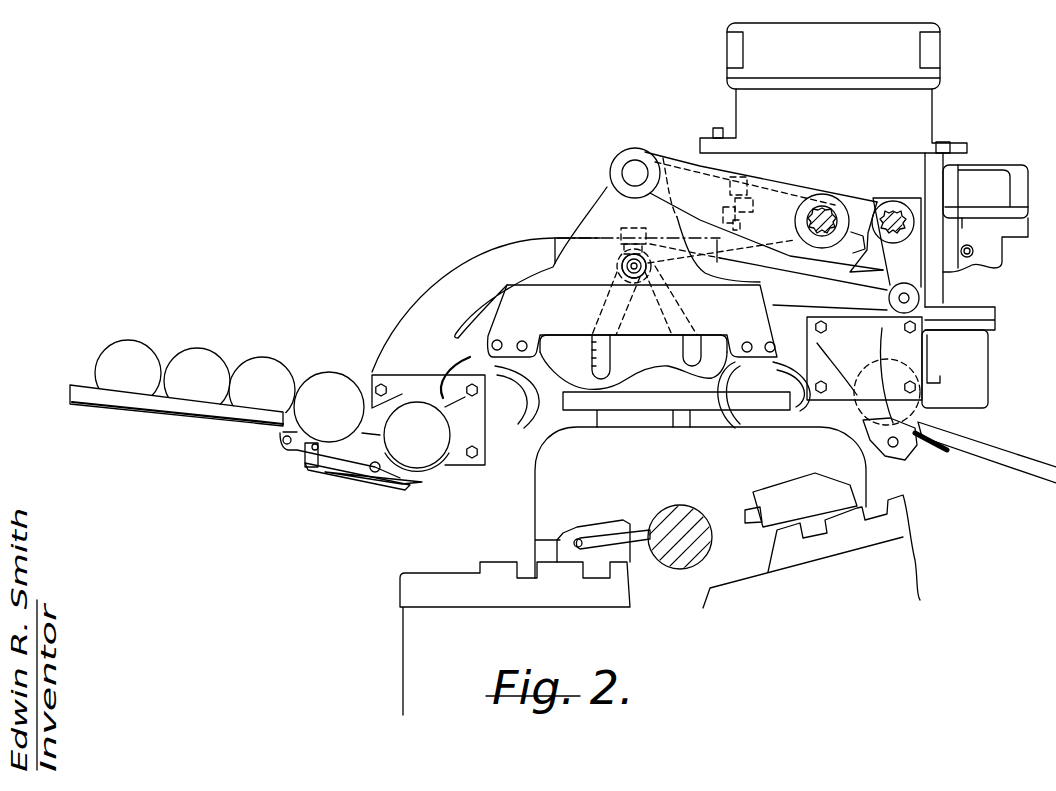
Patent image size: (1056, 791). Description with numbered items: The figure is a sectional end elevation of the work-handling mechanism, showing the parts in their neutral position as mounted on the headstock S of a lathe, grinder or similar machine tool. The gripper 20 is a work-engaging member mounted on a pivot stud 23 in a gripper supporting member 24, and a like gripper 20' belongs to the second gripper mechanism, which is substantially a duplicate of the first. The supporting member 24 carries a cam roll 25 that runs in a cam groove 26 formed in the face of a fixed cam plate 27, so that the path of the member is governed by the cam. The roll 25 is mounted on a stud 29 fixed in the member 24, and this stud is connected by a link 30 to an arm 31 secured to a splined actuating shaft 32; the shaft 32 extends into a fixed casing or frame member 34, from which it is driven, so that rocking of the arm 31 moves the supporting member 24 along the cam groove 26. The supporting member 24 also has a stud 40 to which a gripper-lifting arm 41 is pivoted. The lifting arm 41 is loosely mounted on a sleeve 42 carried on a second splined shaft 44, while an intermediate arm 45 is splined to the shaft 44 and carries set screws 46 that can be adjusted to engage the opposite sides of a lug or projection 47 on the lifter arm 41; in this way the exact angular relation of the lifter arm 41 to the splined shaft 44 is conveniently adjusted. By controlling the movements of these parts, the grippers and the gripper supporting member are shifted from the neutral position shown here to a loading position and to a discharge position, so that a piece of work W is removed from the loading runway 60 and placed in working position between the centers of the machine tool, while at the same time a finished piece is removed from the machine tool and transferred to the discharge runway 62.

The gripper 20 is at (455, 407).
The gripper jaws 20' is at (764, 395).
The pivot stud 23 is at (522, 341).
The gripper supporting member 24 is at (590, 282).
The cam roll 25 is at (647, 267).
The cam groove 26 is at (605, 352).
The fixed cam plate 27 is at (628, 372).
The stud 29 is at (622, 268).
The link 30 is at (812, 302).
The arm 31 is at (907, 280).
The splined actuating shaft 32 is at (894, 213).
The fixed casing or frame member 34 is at (912, 158).
The stud 40 is at (633, 173).
The gripper-lifting arm 41 is at (760, 193).
The sleeve 42 is at (822, 209).
The second splined shaft 44 is at (838, 208).
The intermediate arm 45 is at (753, 205).
The set screws 46 is at (742, 180).
The lug or projection 47 is at (728, 200).
The loading runway 60 is at (181, 410).
The discharge runway 62 is at (1018, 462).
The piece of work W is at (417, 454).
The headstock S is at (581, 482).